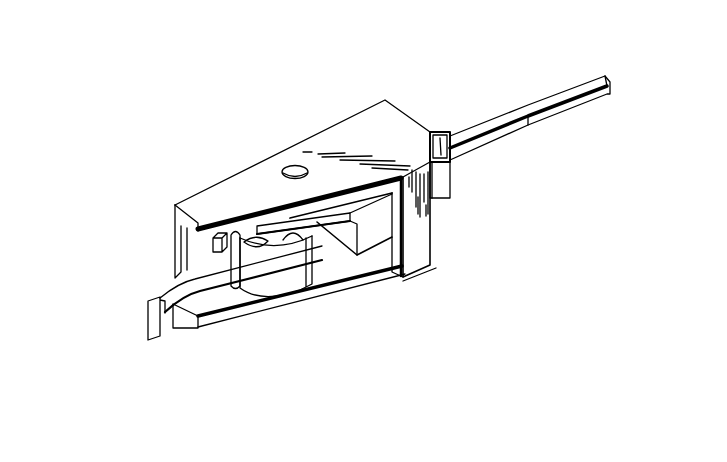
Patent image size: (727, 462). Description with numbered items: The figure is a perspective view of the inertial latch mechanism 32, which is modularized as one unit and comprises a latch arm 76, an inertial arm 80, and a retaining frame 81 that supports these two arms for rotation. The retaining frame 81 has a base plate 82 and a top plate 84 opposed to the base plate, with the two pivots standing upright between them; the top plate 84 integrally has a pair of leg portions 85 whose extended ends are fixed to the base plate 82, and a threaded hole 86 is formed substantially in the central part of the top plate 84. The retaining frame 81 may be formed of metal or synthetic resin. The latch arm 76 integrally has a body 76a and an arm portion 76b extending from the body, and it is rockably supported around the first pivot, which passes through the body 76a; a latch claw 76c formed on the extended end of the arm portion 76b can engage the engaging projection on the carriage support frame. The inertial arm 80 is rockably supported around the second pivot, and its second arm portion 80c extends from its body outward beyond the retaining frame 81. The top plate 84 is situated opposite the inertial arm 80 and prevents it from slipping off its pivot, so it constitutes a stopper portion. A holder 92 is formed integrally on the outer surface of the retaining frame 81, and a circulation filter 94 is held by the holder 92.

The inertial latch mechanism 32 is at (200, 139).
The retaining frame 81 is at (334, 109).
The top plate 84 is at (388, 114).
The threaded hole 86 is at (290, 164).
The circulation filter 94 is at (446, 134).
The second arm portion 80c is at (552, 108).
The holder 92 is at (450, 190).
The leg portions 85 is at (173, 240).
The base plate 82 is at (349, 292).
The inertial arm 80 is at (375, 247).
The latch arm 76 is at (136, 299).
The body 76a is at (272, 284).
The arm portion 76b is at (199, 289).
The latch claw 76c is at (150, 341).